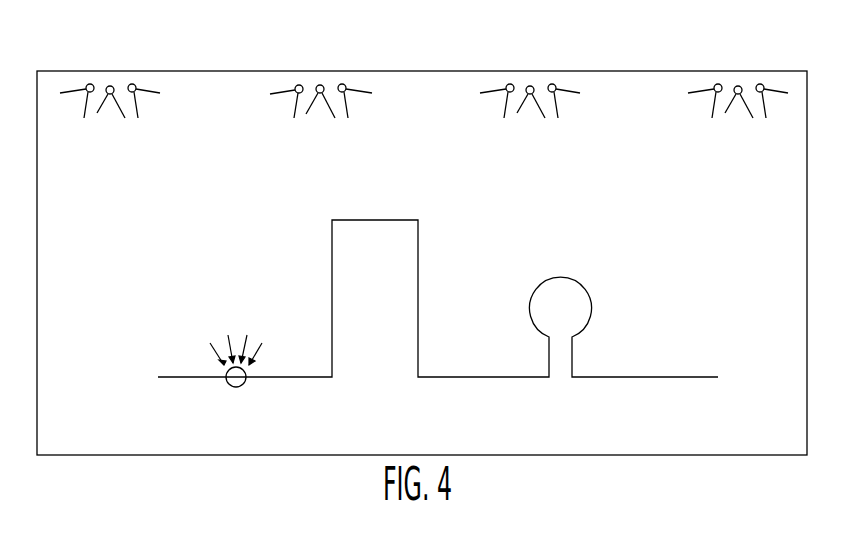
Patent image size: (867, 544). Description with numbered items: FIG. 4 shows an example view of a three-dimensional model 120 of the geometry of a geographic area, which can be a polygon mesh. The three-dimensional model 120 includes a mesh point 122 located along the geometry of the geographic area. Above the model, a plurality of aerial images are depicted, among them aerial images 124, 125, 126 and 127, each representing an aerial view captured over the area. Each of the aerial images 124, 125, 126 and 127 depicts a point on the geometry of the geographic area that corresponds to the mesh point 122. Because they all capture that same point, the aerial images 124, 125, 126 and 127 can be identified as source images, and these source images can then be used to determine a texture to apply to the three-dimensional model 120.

The three-dimensional model 120 is at (331, 290).
The mesh point 122 is at (239, 387).
The aerial image 124 is at (110, 84).
The aerial image 125 is at (133, 83).
The aerial image 126 is at (299, 84).
The aerial image 127 is at (321, 84).